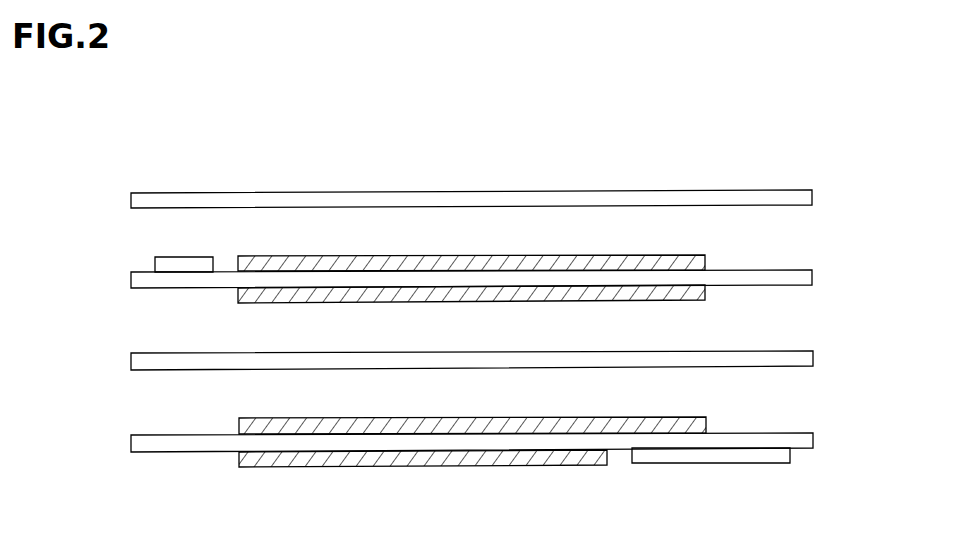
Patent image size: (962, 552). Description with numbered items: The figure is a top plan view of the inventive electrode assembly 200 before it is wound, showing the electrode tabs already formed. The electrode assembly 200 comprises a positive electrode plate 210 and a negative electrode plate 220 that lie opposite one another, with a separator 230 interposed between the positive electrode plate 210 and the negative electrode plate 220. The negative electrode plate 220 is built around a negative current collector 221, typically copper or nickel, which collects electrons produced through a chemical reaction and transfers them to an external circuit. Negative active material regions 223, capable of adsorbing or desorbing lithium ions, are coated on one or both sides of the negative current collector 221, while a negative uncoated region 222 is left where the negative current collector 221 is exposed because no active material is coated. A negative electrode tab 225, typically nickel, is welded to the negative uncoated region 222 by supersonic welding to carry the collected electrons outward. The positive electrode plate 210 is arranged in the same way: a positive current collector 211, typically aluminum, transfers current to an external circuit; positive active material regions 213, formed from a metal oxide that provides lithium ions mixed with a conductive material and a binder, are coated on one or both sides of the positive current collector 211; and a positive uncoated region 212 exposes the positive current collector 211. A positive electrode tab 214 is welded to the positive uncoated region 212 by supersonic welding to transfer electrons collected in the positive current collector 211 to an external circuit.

The electrode assembly 200 is at (100, 133).
The separator 230 is at (792, 197).
The negative electrode plate 220 is at (469, 273).
The negative current collector 221 is at (657, 278).
The negative uncoated region 222 is at (142, 280).
The negative active material region 223 is at (240, 298).
The negative electrode tab 225 is at (182, 262).
The positive electrode plate 210 is at (469, 452).
The positive current collector 211 is at (657, 442).
The positive uncoated region 212 is at (143, 443).
The positive active material region 213 is at (238, 462).
The positive electrode tab 214 is at (712, 458).